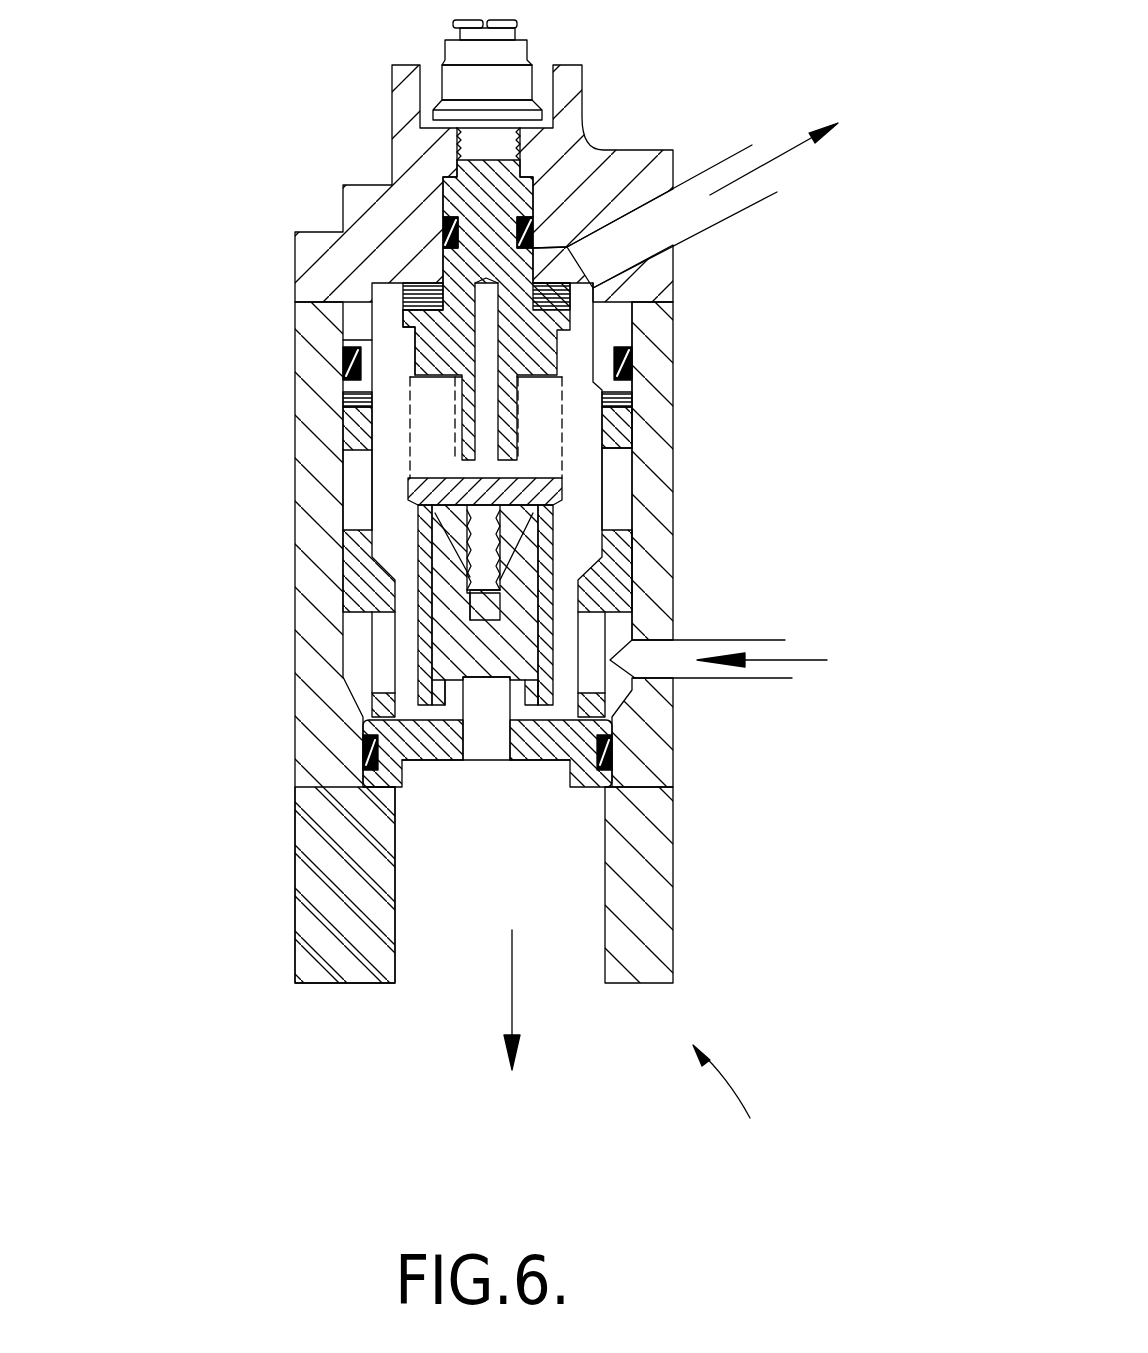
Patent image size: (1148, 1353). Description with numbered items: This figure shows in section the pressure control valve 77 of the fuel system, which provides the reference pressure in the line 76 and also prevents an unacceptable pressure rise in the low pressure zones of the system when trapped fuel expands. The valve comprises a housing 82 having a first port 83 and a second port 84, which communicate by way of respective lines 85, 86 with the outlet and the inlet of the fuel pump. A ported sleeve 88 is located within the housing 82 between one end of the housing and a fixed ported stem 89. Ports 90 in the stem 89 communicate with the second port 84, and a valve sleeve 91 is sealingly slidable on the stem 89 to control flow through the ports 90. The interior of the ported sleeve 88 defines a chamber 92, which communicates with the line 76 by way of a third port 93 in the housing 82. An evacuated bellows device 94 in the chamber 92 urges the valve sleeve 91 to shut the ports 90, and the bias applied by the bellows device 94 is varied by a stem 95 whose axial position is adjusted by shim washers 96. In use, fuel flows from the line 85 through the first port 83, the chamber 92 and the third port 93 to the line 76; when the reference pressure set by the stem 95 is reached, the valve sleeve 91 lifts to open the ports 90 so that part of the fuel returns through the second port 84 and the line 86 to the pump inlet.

The line 76 is at (762, 165).
The valve 77 is at (743, 1098).
The housing 82 is at (650, 482).
The first port 83 is at (633, 660).
The second port 84 is at (565, 898).
The line 85 is at (797, 665).
The line 86 is at (512, 975).
The ported sleeve 88 is at (628, 425).
The fixed ported stem 89 is at (458, 648).
The ports 90 is at (527, 693).
The valve sleeve 91 is at (445, 520).
The chamber 92 is at (575, 367).
The third port 93 is at (595, 258).
The evacuated bellows device 94 is at (433, 416).
The stem 95 is at (445, 339).
The shim washers 96 is at (403, 290).